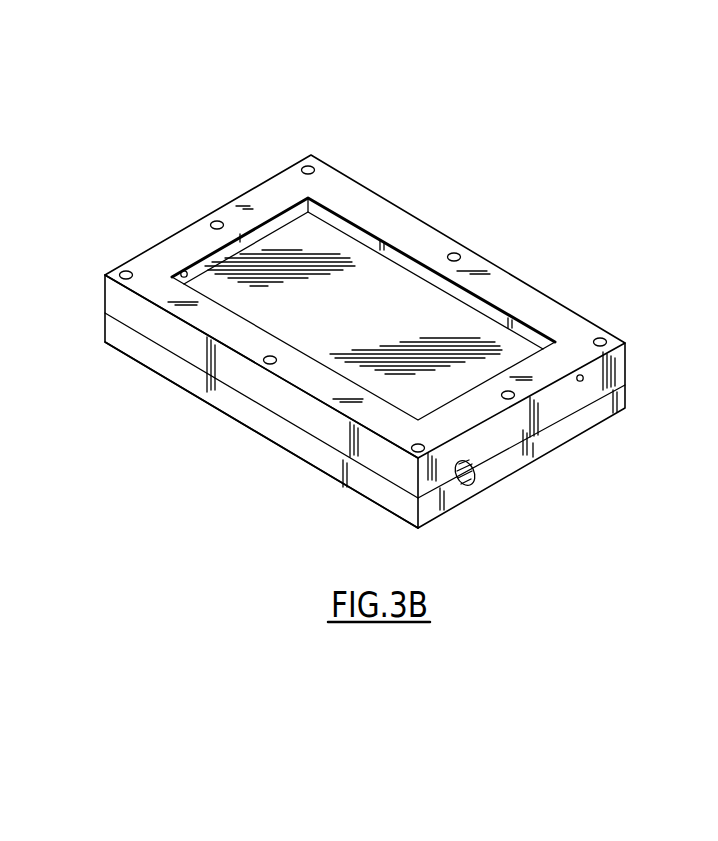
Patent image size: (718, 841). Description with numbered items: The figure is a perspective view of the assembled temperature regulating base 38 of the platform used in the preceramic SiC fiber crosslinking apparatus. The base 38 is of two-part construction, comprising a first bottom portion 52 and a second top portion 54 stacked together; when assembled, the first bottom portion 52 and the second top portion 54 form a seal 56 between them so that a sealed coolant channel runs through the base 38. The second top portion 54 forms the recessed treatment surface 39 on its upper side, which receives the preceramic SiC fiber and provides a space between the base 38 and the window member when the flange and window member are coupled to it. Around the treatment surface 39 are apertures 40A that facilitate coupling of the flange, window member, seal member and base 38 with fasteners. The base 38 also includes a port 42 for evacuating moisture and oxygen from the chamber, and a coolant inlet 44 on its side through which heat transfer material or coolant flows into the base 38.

The base 38 is at (377, 183).
The recessed treatment surface 39 is at (319, 289).
The apertures 40A is at (457, 253).
The port 42 is at (183, 268).
The coolant inlet 44 is at (473, 482).
The first bottom portion 52 is at (629, 397).
The second top portion 54 is at (629, 363).
The seal 56 is at (303, 448).